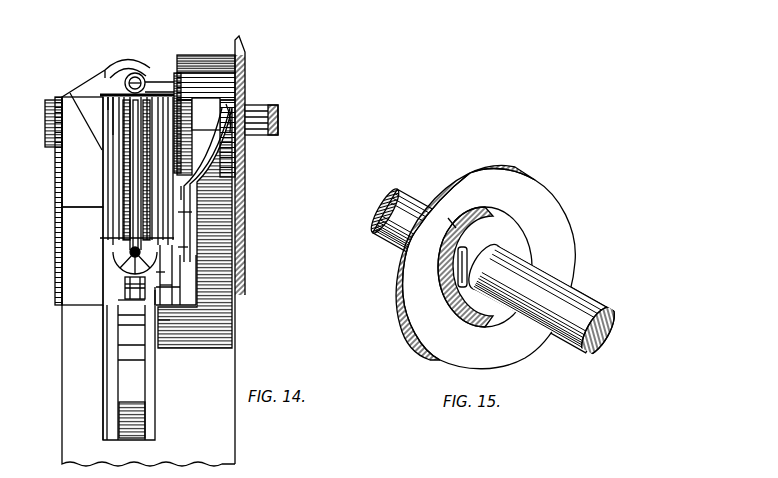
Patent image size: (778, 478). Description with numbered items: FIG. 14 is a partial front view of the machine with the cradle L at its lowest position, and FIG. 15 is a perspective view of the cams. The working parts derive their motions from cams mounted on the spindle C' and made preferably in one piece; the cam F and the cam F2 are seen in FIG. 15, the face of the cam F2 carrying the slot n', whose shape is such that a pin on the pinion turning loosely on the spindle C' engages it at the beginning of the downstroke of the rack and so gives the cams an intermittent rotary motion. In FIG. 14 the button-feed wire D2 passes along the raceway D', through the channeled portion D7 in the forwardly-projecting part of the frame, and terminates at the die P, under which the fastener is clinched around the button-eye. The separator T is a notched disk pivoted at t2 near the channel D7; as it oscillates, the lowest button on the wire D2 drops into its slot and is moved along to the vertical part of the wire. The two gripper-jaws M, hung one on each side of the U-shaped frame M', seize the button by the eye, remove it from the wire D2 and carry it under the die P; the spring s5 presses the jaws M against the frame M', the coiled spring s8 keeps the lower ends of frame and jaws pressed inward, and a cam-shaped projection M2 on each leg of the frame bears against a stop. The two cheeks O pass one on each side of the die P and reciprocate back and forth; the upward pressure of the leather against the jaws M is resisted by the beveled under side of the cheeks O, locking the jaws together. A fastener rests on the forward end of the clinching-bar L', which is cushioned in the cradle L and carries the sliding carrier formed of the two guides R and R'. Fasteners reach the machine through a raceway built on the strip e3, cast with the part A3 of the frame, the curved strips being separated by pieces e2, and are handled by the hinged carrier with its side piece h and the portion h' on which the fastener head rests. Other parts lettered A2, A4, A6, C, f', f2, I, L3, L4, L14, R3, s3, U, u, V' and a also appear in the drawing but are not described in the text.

In FIG. 14, the frame side member A2 is at (62, 206).
In FIG. 14, the frame part A3 is at (245, 210).
In FIG. 14, the frame top block A4 is at (203, 57).
In FIG. 14, the frame bracket A6 is at (165, 298).
In FIG. 14, the shaft C is at (271, 120).
In FIG. 15, the spindle C' is at (489, 269).
In FIG. 14, the button-feed wire D2 is at (130, 65).
In FIG. 14, the raceway D' is at (137, 72).
In FIG. 14, the channeled portion D7 is at (130, 218).
In FIG. 14, the separating pieces e2 is at (222, 145).
In FIG. 14, the raceway strip e3 is at (212, 160).
In FIG. 15, the cam F is at (485, 266).
In FIG. 15, the cam F2 is at (485, 267).
In FIG. 14, the pipe f' is at (159, 79).
In FIG. 14, the pipe branch f2 is at (181, 103).
In FIG. 14, the side piece h is at (185, 206).
In FIG. 14, the carrier portion h' is at (215, 228).
In FIG. 14, the member I is at (206, 114).
In FIG. 14, the cradle L is at (119, 268).
In FIG. 14, the clinching-bar L' is at (131, 337).
In FIG. 14, the channel part L3 is at (163, 273).
In FIG. 14, the channel part L4 is at (185, 186).
In FIG. 14, the channel block L14 is at (143, 418).
In FIG. 14, the gripper-jaws M is at (109, 178).
In FIG. 14, the U-shaped frame M' is at (119, 262).
In FIG. 14, the cam-shaped projection M2 is at (123, 282).
In FIG. 14, the cheeks O is at (120, 240).
In FIG. 14, the die P is at (120, 293).
In FIG. 14, the carrier guide R is at (169, 334).
In FIG. 14, the carrier guide R' is at (118, 326).
In FIG. 14, the rack part R3 is at (130, 298).
In FIG. 14, the spring s3 is at (110, 107).
In FIG. 14, the spring s5 is at (112, 132).
In FIG. 14, the coiled spring s8 is at (105, 87).
In FIG. 14, the separator T is at (118, 145).
In FIG. 14, the pivot t2 is at (176, 73).
In FIG. 14, the member U is at (180, 296).
In FIG. 14, the member u is at (185, 240).
In FIG. 14, the valve V' is at (248, 109).
In FIG. 15, the aperture a is at (453, 223).
In FIG. 15, the slot n' is at (465, 273).